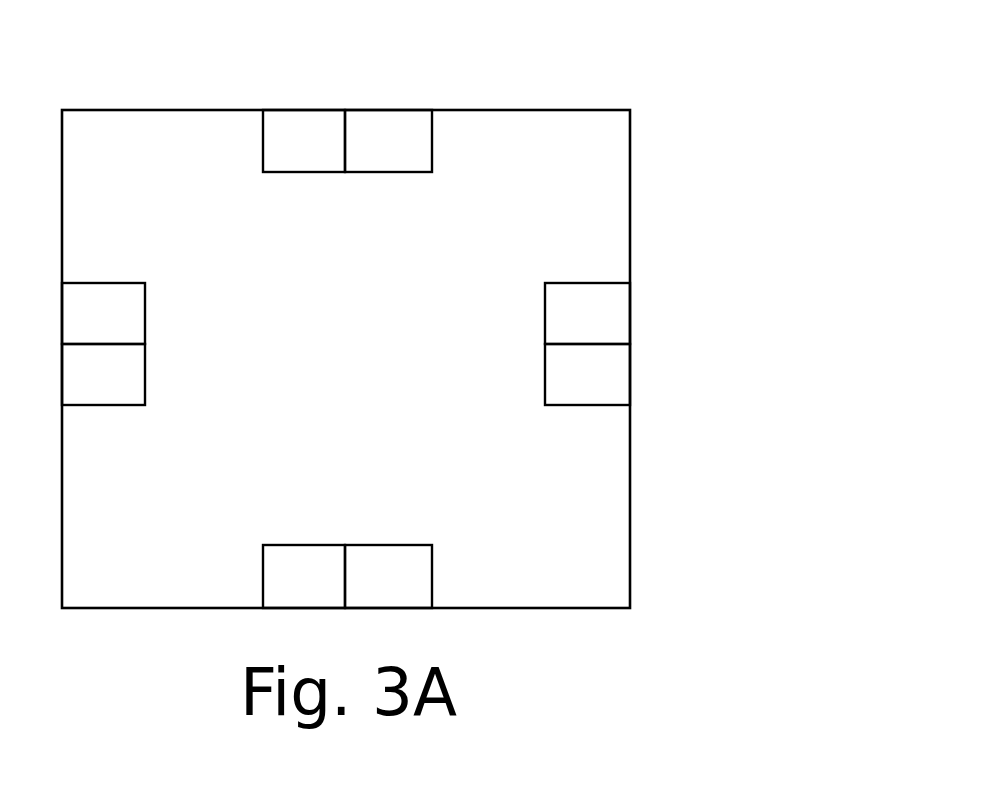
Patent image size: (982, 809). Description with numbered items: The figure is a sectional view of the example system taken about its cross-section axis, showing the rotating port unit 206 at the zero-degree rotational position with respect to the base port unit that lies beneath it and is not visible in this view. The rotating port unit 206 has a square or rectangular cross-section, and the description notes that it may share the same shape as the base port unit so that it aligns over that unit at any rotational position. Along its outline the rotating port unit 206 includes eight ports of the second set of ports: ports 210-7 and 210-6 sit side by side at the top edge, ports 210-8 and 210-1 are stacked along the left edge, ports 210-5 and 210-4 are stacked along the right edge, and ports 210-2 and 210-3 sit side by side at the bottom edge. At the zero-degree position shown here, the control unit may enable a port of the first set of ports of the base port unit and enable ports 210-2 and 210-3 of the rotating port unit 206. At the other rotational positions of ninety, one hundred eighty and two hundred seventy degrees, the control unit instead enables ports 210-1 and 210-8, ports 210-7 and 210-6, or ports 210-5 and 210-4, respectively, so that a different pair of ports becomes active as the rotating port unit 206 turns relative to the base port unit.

The rotating port unit 206 is at (523, 110).
The port 210-1 is at (132, 391).
The port 210-2 is at (335, 594).
The port 210-3 is at (420, 594).
The port 210-4 is at (615, 391).
The port 210-5 is at (615, 329).
The port 210-6 is at (420, 157).
The port 210-7 is at (335, 157).
The port 210-8 is at (132, 329).